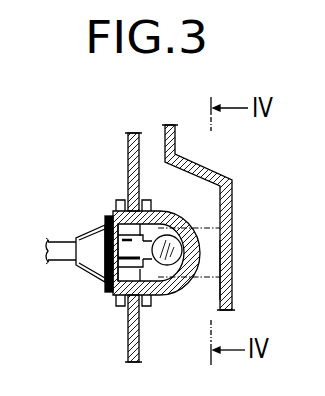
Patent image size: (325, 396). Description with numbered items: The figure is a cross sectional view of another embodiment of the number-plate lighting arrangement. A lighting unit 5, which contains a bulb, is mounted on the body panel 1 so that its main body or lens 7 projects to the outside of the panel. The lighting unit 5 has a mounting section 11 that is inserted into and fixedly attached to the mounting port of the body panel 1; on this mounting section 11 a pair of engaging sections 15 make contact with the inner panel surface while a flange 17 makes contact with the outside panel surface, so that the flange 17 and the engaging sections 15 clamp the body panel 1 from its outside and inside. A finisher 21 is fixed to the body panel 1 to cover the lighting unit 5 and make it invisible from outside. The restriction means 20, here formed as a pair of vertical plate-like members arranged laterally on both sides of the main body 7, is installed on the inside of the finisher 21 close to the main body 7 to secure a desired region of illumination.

The body panel 1 is at (128, 347).
The lighting unit 5 is at (158, 287).
The main body or lens 7 is at (165, 211).
The mounting section 11 is at (112, 293).
The engaging sections 15 is at (112, 214).
The flange 17 is at (148, 200).
The restriction means 20 is at (220, 228).
The finisher 21 is at (232, 263).